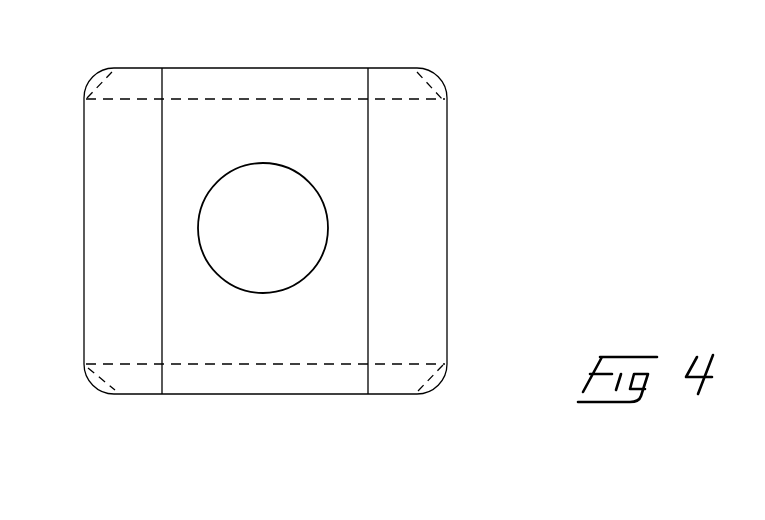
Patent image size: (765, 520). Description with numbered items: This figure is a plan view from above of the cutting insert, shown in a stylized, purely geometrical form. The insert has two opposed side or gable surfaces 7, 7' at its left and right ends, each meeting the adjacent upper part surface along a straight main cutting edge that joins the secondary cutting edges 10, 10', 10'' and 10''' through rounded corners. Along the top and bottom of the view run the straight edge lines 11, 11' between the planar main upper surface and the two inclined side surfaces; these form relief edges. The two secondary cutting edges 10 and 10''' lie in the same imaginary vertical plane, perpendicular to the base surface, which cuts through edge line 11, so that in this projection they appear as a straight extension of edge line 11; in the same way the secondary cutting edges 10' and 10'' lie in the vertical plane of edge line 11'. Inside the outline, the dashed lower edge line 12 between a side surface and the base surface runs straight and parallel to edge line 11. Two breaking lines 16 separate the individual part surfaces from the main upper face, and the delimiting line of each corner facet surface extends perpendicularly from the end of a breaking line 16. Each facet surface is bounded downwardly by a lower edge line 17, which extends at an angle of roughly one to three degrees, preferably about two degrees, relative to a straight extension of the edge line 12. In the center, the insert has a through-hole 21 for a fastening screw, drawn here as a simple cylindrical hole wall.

The third side or gable surface 7 is at (58, 231).
The fourth side or gable surface 7' is at (472, 231).
The secondary cutting edge 10 is at (108, 408).
The secondary cutting edge 10' is at (124, 55).
The secondary cutting edge 10'' is at (424, 63).
The secondary cutting edge 10''' is at (414, 412).
The edge line forming relief edge 11 is at (265, 429).
The edge line forming relief edge 11' is at (265, 40).
The lower edge line 12 is at (208, 362).
The breaking line 16 is at (162, 130).
The lower edge line of facet surface 17 is at (118, 360).
The through-hole 21 is at (291, 272).